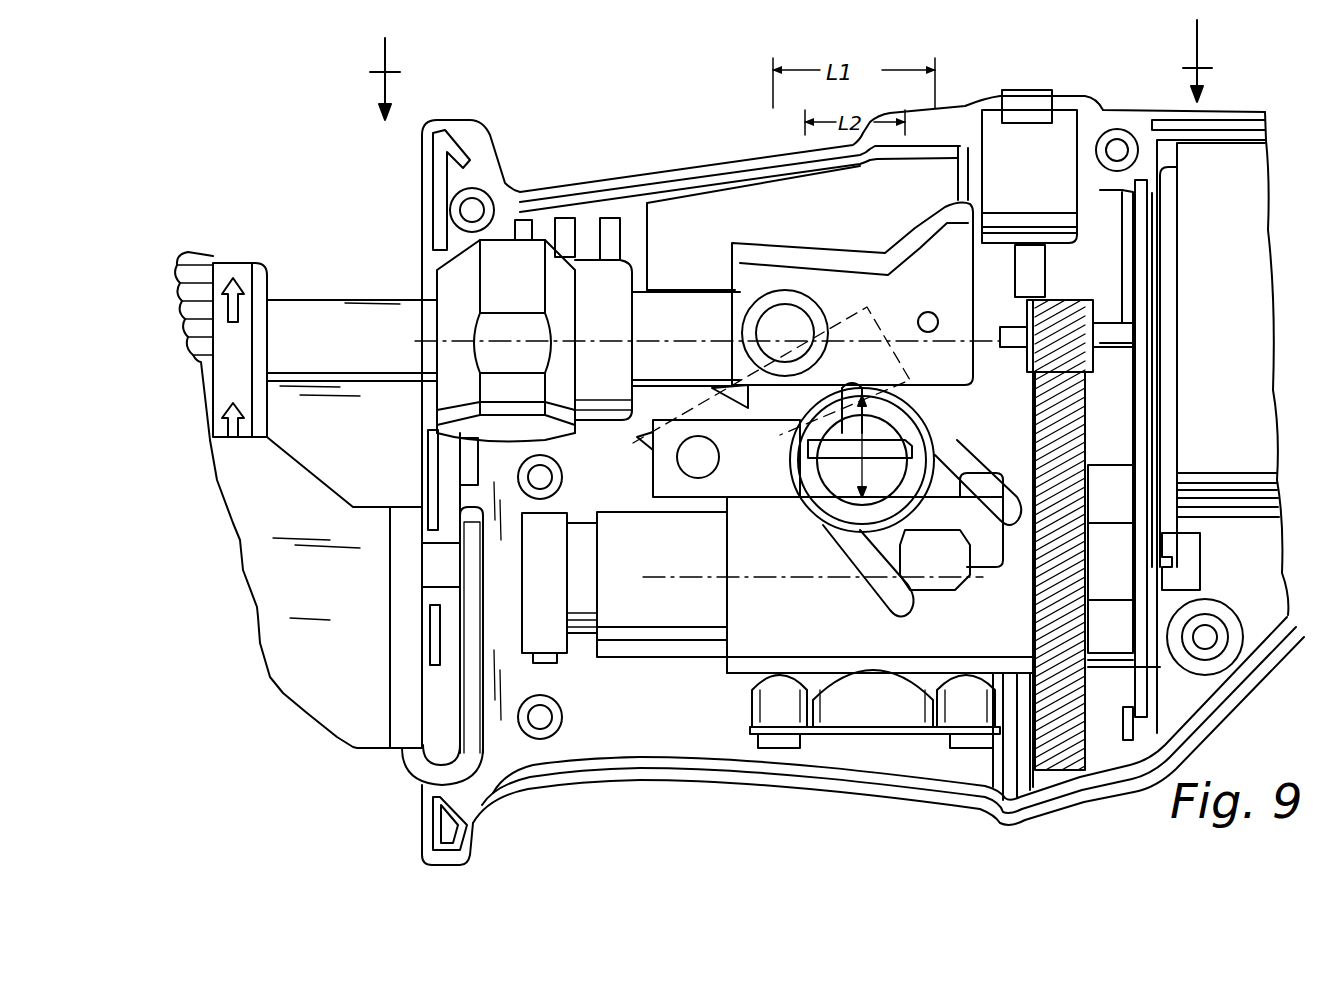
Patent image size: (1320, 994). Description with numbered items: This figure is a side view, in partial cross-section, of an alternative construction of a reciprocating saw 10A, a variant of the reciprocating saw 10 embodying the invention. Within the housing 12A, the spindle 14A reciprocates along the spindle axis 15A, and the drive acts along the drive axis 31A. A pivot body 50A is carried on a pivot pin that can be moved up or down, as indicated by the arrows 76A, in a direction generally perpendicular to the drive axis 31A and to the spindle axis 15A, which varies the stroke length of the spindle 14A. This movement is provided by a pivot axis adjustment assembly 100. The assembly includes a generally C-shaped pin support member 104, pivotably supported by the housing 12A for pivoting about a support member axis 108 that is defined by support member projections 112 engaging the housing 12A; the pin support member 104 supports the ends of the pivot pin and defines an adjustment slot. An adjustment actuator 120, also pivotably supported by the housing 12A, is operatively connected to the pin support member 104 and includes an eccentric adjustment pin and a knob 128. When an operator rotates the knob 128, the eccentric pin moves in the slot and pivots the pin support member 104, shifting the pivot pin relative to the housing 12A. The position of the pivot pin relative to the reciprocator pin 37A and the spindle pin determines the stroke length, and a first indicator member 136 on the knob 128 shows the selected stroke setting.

The reciprocating saw 10 is at (798, 70).
The reciprocating saw 10A is at (338, 775).
The housing 12A is at (718, 172).
The spindle 14A is at (374, 298).
The spindle axis 15A is at (412, 343).
The pin support member 104 is at (708, 392).
The knob 128 is at (853, 392).
The arrows 76A is at (890, 425).
The first indicator member 136 is at (907, 450).
The support member axis 108 is at (690, 462).
The support member projections 112 is at (697, 480).
The drive axis 31A is at (683, 580).
The pivot axis adjustment assembly 100 is at (806, 537).
The adjustment actuator 120 is at (855, 533).
The reciprocator pin 37A is at (958, 561).
The pivot body 50A is at (900, 600).